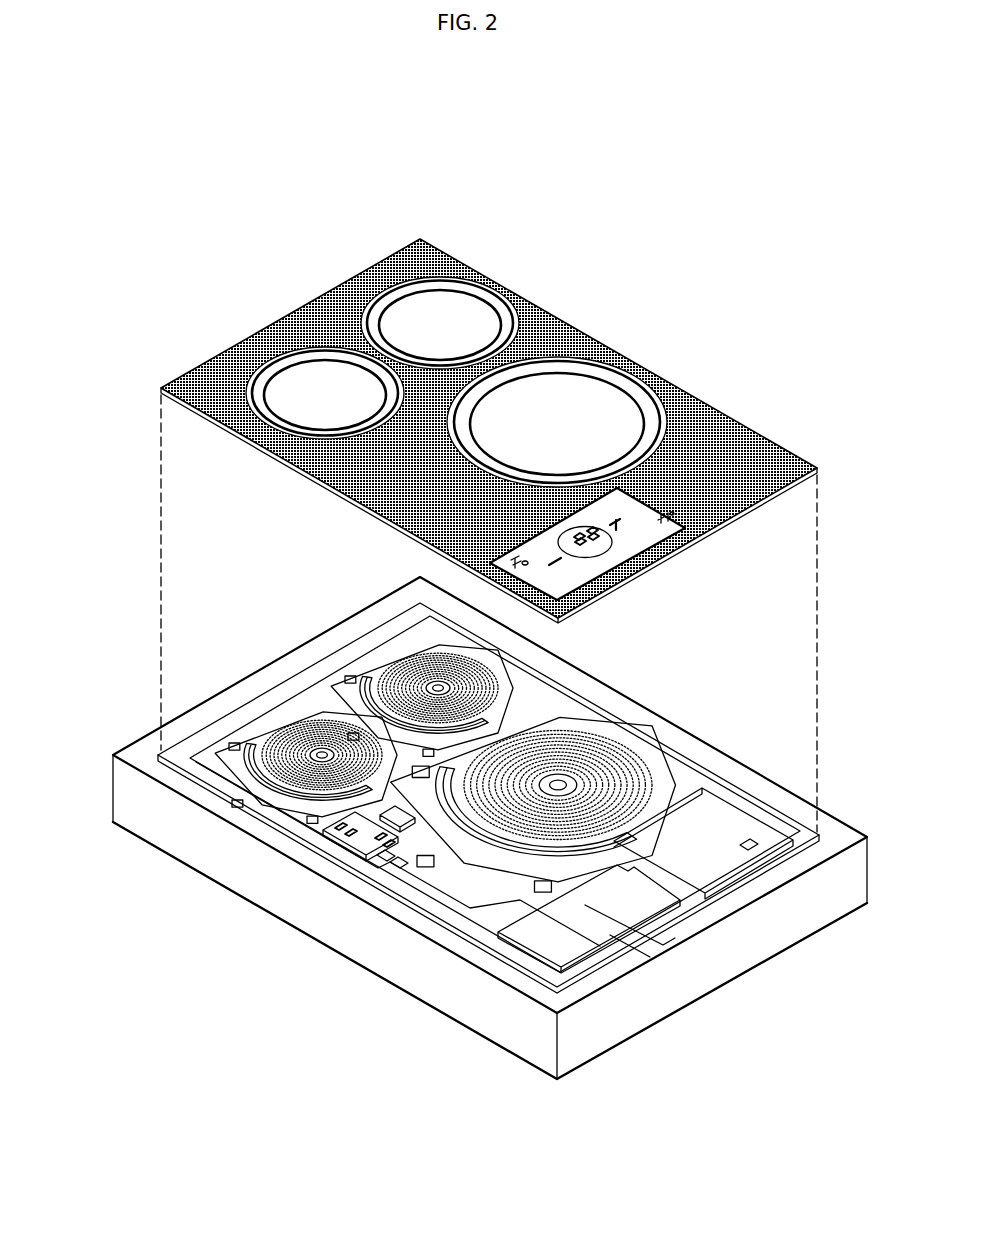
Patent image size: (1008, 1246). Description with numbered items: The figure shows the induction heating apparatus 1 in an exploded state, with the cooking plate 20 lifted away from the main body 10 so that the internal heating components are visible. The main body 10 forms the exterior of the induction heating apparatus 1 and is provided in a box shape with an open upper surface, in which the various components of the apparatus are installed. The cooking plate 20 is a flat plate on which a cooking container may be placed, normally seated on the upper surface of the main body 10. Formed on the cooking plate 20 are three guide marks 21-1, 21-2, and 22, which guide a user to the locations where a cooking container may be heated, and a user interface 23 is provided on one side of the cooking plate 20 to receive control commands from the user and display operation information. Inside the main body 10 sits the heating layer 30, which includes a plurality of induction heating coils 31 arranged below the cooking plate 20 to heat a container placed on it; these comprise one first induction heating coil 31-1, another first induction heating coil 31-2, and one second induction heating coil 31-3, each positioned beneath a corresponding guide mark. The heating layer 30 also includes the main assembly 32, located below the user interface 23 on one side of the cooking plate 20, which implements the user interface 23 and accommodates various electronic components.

The induction heating apparatus 1 is at (453, 115).
The main body 10 is at (347, 933).
The cooking plate 20 is at (489, 417).
The guide mark 21-1 is at (262, 358).
The guide mark 21-2 is at (385, 293).
The guide mark 22 is at (623, 370).
The user interface 23 is at (635, 550).
The heating layer 30 is at (429, 798).
The induction heating coils 31 is at (367, 730).
The first induction heating coil 31-1 is at (305, 727).
The first induction heating coil 31-2 is at (415, 662).
The second induction heating coil 31-3 is at (480, 788).
The main assembly 32 is at (608, 922).